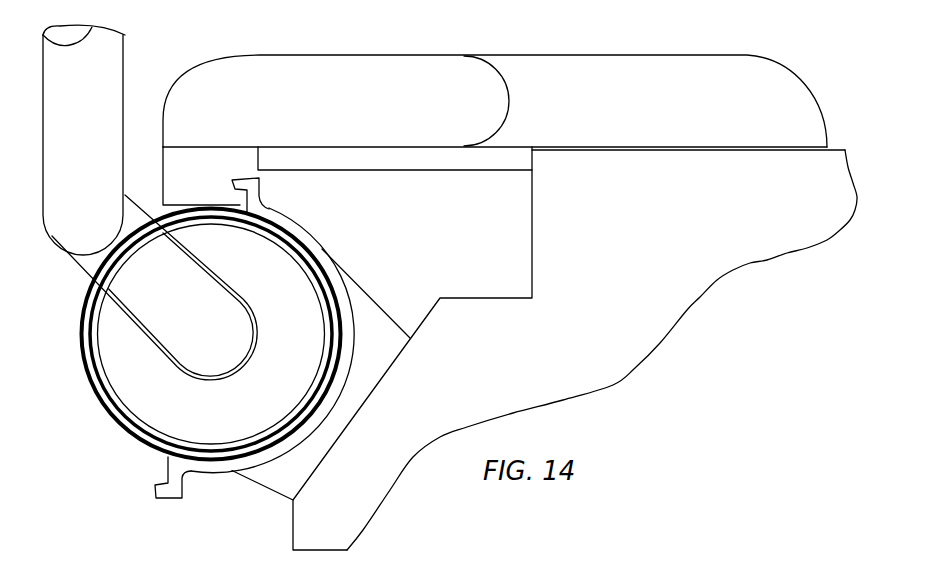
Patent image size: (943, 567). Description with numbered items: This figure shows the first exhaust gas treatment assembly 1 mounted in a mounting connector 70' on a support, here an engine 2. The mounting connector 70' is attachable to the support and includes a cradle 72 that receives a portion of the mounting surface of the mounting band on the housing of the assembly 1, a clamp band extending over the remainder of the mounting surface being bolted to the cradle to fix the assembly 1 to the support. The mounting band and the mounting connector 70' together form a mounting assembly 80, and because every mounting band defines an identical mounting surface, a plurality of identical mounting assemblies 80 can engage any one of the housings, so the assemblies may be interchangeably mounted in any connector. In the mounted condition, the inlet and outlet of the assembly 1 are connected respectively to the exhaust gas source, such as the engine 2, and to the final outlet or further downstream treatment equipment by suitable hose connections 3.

The exhaust gas treatment assembly 1 is at (185, 336).
The engine 2 is at (585, 248).
The hose connections 3 is at (125, 67).
The cradle 72 is at (306, 232).
The mounting connector 70' is at (224, 494).
The mounting assembly 80 is at (125, 460).